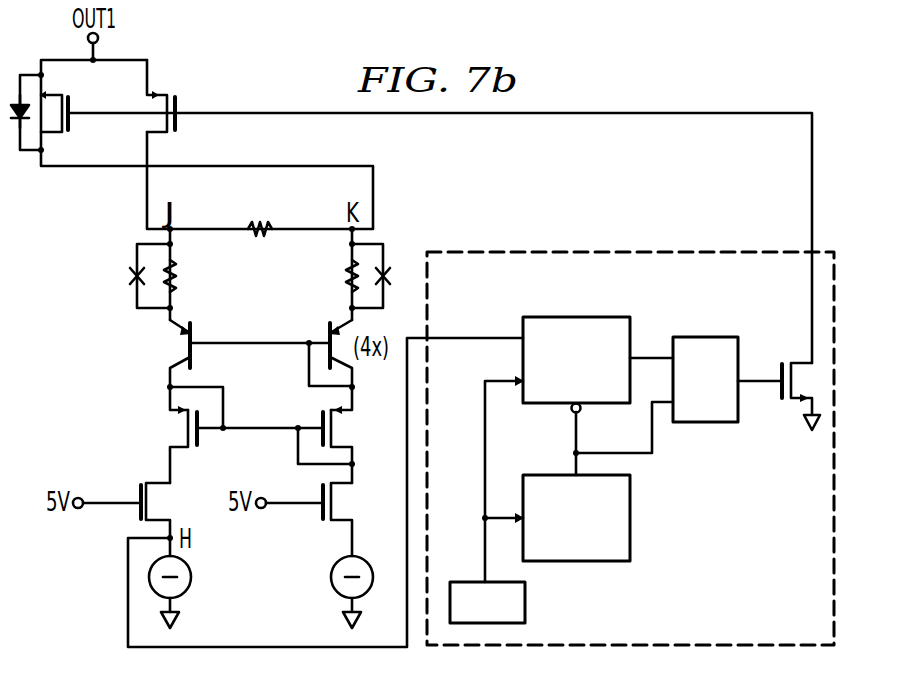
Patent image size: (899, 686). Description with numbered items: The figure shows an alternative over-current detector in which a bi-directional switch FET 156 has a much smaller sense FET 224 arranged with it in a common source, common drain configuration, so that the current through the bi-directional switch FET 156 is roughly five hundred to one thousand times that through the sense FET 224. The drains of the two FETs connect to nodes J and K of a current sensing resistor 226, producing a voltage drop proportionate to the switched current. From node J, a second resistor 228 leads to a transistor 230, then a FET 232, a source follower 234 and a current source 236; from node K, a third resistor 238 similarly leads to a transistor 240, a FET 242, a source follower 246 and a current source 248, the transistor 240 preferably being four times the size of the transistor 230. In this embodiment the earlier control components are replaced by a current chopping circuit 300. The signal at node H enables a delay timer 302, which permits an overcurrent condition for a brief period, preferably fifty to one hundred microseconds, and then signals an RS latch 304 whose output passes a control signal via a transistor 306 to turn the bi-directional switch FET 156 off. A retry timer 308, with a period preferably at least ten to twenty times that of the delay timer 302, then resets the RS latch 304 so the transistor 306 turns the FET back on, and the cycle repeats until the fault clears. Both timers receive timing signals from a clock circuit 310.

The sense FET 224 is at (78, 104).
The bi-directional switch FET 156 is at (182, 104).
The current sensing resistor 226 is at (254, 226).
The second resistor 228 is at (176, 276).
The third resistor 238 is at (346, 274).
The transistor 230 is at (192, 358).
The transistor 240 is at (326, 330).
The FET 232 is at (200, 444).
The FET 242 is at (320, 416).
The source follower 234 is at (139, 490).
The source follower 246 is at (321, 514).
The current source 236 is at (192, 576).
The current source 248 is at (330, 578).
The current chopping circuit 300 is at (628, 250).
The delay timer 302 is at (582, 315).
The RS latch 304 is at (708, 336).
The transistor 306 is at (778, 400).
The retry timer 308 is at (632, 516).
The clock circuit 310 is at (527, 600).